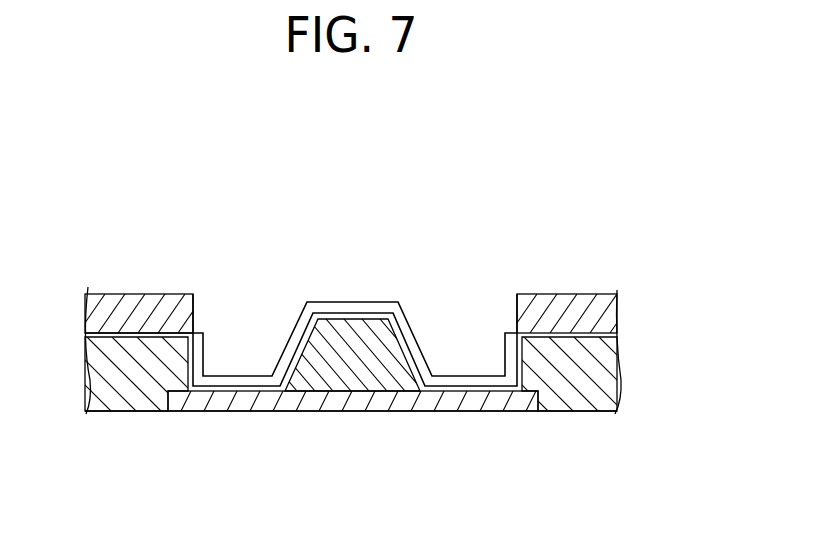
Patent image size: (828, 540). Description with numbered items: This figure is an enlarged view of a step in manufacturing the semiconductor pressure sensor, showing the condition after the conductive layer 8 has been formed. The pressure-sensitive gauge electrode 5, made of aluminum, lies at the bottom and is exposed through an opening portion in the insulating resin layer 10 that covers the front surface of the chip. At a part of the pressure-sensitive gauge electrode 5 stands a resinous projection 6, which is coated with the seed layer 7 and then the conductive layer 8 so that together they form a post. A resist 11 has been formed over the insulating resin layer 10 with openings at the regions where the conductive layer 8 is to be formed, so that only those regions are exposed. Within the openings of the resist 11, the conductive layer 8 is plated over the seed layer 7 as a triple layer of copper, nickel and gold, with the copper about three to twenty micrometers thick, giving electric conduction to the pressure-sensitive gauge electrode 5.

The pressure-sensitive gauge electrode 5 is at (496, 409).
The resinous projection 6 is at (357, 378).
The seed layer 7 is at (408, 337).
The conductive layer 8 is at (357, 300).
The insulating resin layer 10 is at (614, 380).
The resist 11 is at (566, 293).